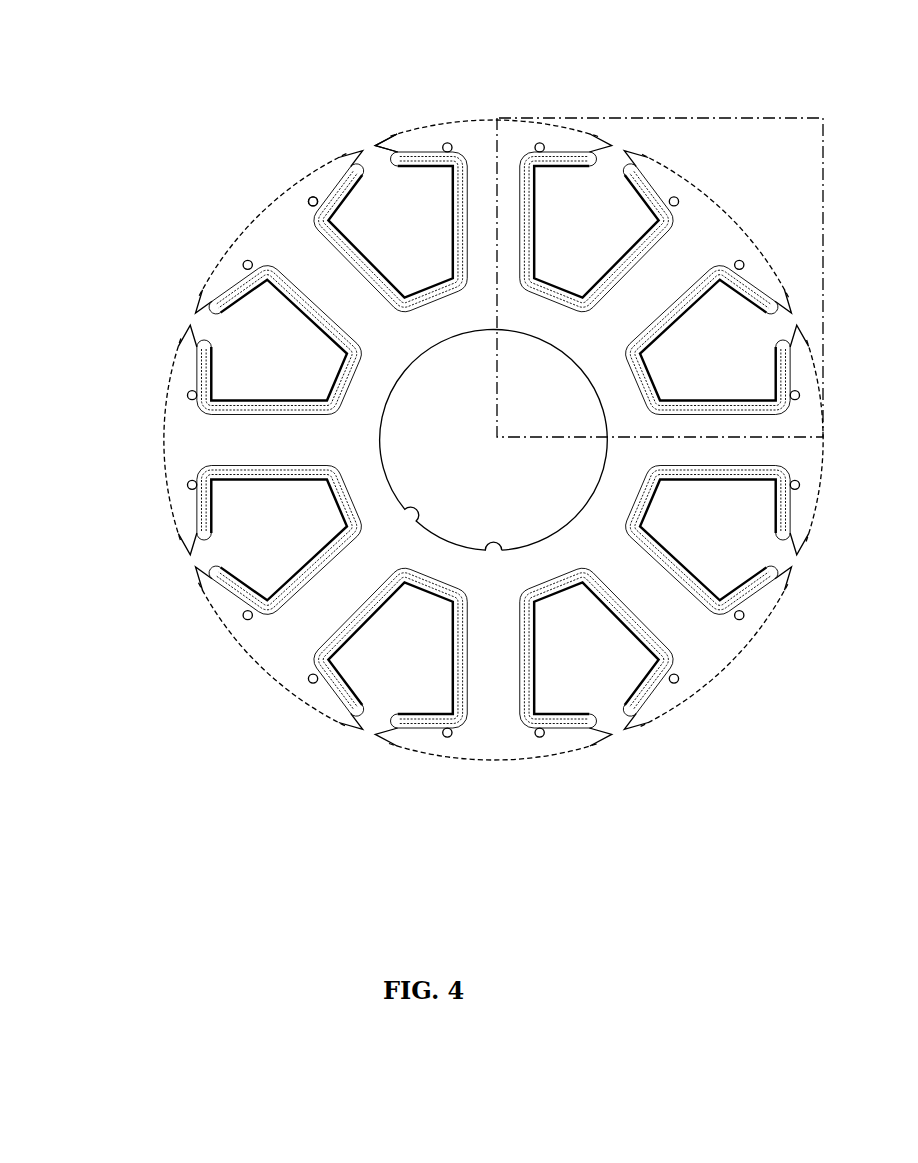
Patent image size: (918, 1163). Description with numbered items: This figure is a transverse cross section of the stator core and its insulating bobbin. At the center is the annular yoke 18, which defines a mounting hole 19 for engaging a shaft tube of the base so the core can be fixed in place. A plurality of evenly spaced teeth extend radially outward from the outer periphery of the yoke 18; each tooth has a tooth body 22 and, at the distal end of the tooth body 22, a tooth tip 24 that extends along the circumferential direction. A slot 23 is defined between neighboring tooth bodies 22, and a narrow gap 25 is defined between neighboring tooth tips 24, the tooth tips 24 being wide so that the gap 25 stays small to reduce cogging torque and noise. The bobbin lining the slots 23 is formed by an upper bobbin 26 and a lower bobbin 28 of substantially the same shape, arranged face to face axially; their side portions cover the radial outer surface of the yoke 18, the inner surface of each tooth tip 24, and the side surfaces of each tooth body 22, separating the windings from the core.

The yoke 18 is at (366, 394).
The mounting hole 19 is at (437, 440).
The tooth body 22 is at (312, 262).
The slot 23 is at (424, 205).
The tooth tip 24 is at (308, 204).
The gap 25 is at (372, 147).
The upper bobbin 26 is at (270, 466).
The lower bobbin 28 is at (306, 483).